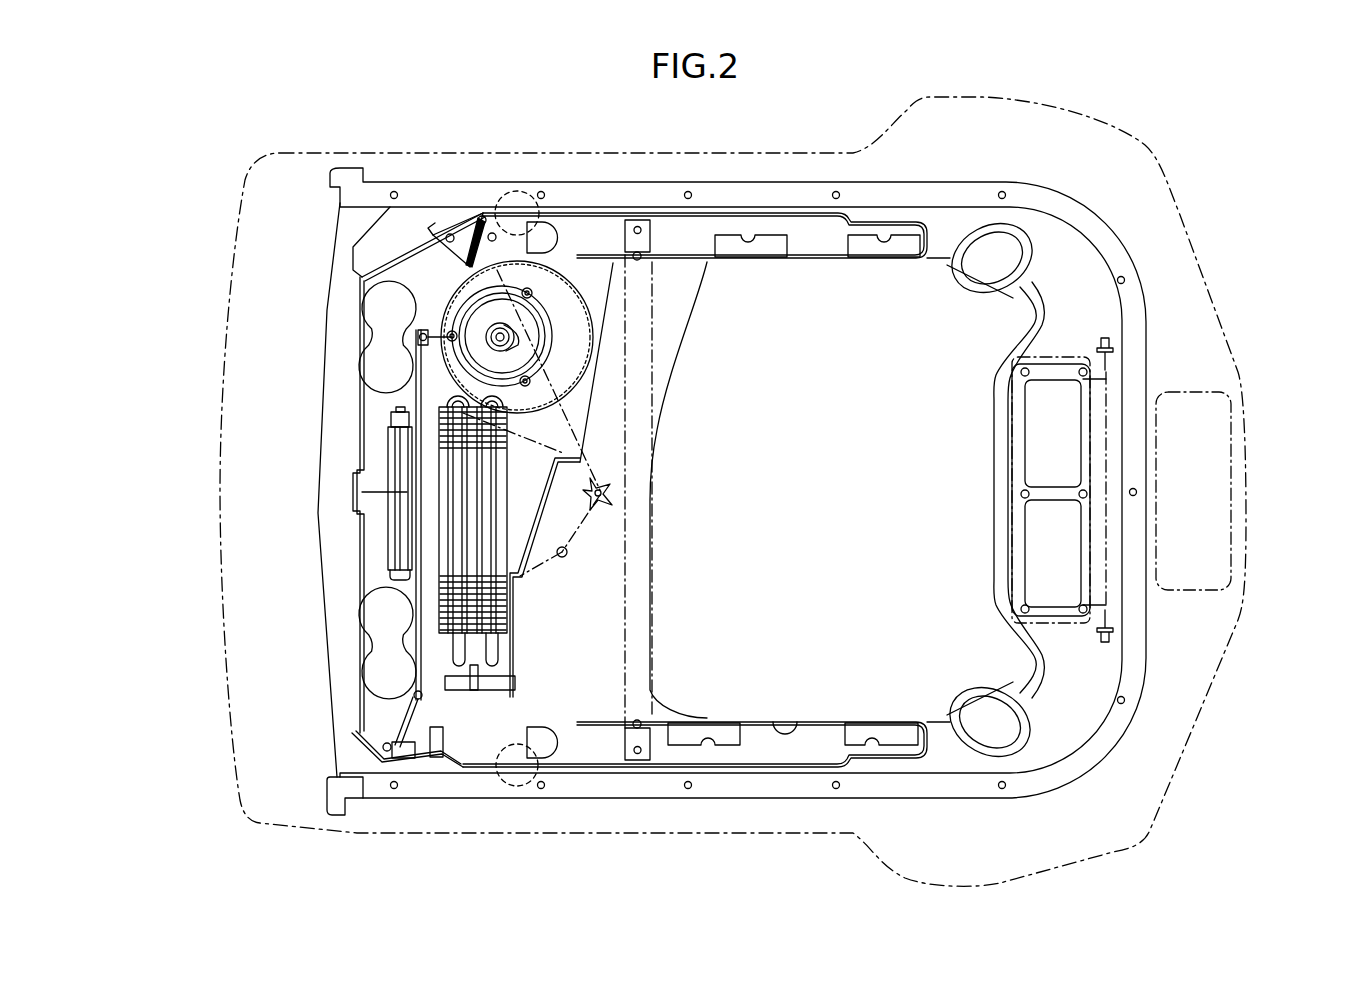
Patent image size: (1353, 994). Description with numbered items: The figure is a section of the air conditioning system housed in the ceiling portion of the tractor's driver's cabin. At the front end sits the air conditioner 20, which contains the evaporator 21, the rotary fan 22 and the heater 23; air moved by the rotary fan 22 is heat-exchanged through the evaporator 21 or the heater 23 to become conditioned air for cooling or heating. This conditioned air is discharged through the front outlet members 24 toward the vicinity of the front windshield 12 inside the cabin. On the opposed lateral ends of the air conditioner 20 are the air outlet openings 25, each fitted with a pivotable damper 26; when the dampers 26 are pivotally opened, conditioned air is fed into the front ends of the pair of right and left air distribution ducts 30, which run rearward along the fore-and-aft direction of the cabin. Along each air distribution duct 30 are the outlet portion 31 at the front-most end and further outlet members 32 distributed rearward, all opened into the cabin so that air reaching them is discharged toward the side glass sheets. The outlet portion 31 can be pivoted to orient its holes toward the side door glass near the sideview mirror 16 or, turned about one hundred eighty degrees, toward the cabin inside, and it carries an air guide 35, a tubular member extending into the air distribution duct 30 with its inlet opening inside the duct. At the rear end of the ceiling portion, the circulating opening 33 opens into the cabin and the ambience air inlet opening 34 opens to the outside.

The front windshield 12 is at (317, 426).
The sideview mirror 16 is at (788, 727).
The air conditioner 20 is at (376, 534).
The evaporator 21 is at (498, 493).
The rotary fan 22 is at (560, 318).
The heater 23 is at (392, 557).
The front outlet members 24 is at (383, 317).
The air outlet openings 25 is at (466, 215).
The pivotable dampers 26 is at (453, 247).
The air distribution ducts 30 is at (813, 210).
The outlet portion 31 is at (510, 198).
The outlet members 32 is at (756, 236).
The circulating opening 33 is at (1048, 534).
The ambience air inlet opening 34 is at (1232, 477).
The air guide 35 is at (552, 231).